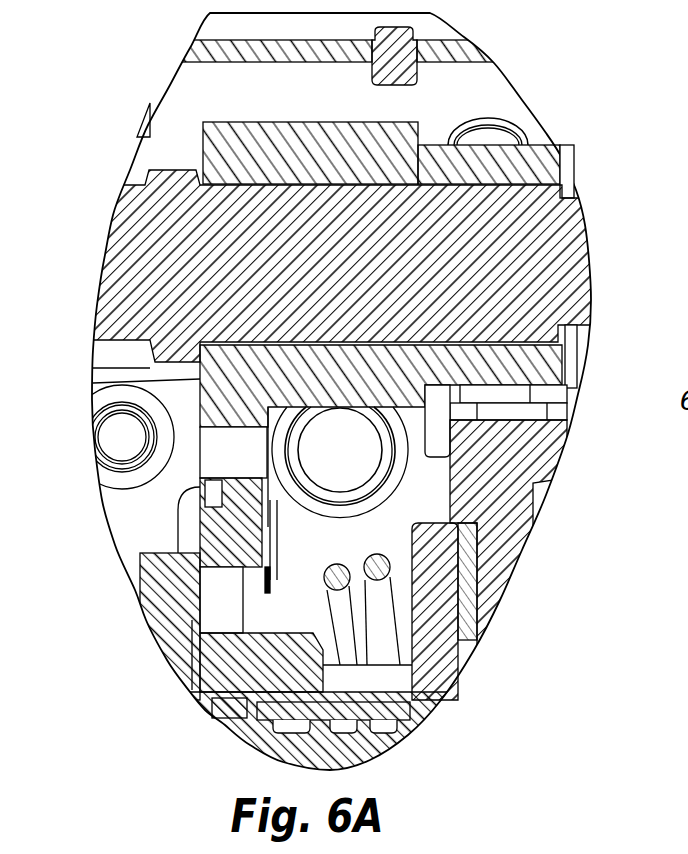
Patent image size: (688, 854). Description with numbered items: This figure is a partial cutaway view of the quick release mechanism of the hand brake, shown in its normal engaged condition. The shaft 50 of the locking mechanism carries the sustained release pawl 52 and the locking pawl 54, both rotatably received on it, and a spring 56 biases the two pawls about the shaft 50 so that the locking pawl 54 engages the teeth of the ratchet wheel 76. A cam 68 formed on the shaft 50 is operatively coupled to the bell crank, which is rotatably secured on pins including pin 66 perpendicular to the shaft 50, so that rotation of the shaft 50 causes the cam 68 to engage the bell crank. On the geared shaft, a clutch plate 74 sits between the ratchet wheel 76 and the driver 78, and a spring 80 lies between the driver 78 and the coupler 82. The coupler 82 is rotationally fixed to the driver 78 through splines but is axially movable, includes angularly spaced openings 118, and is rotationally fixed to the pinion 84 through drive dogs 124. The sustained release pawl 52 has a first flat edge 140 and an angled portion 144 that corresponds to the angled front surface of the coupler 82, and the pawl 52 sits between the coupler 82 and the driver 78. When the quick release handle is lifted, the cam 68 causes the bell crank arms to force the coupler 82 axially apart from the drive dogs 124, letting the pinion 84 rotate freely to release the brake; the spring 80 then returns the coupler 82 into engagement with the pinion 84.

The shaft 50 is at (570, 253).
The sustained release pawl 52 is at (304, 146).
The locking pawl 54 is at (447, 165).
The spring 56 is at (489, 128).
The pin 66 is at (338, 467).
The cam 68 is at (112, 357).
The clutch plate 74 is at (465, 600).
The ratchet wheel 76 is at (520, 410).
The driver 78 is at (438, 640).
The spring 80 is at (383, 565).
The coupler 82 is at (225, 533).
The pinion 84 is at (168, 583).
The angularly spaced openings 118 is at (258, 603).
The drive dogs 124 is at (228, 690).
The first flat edge 140 is at (268, 512).
The angled portion 144 is at (257, 492).